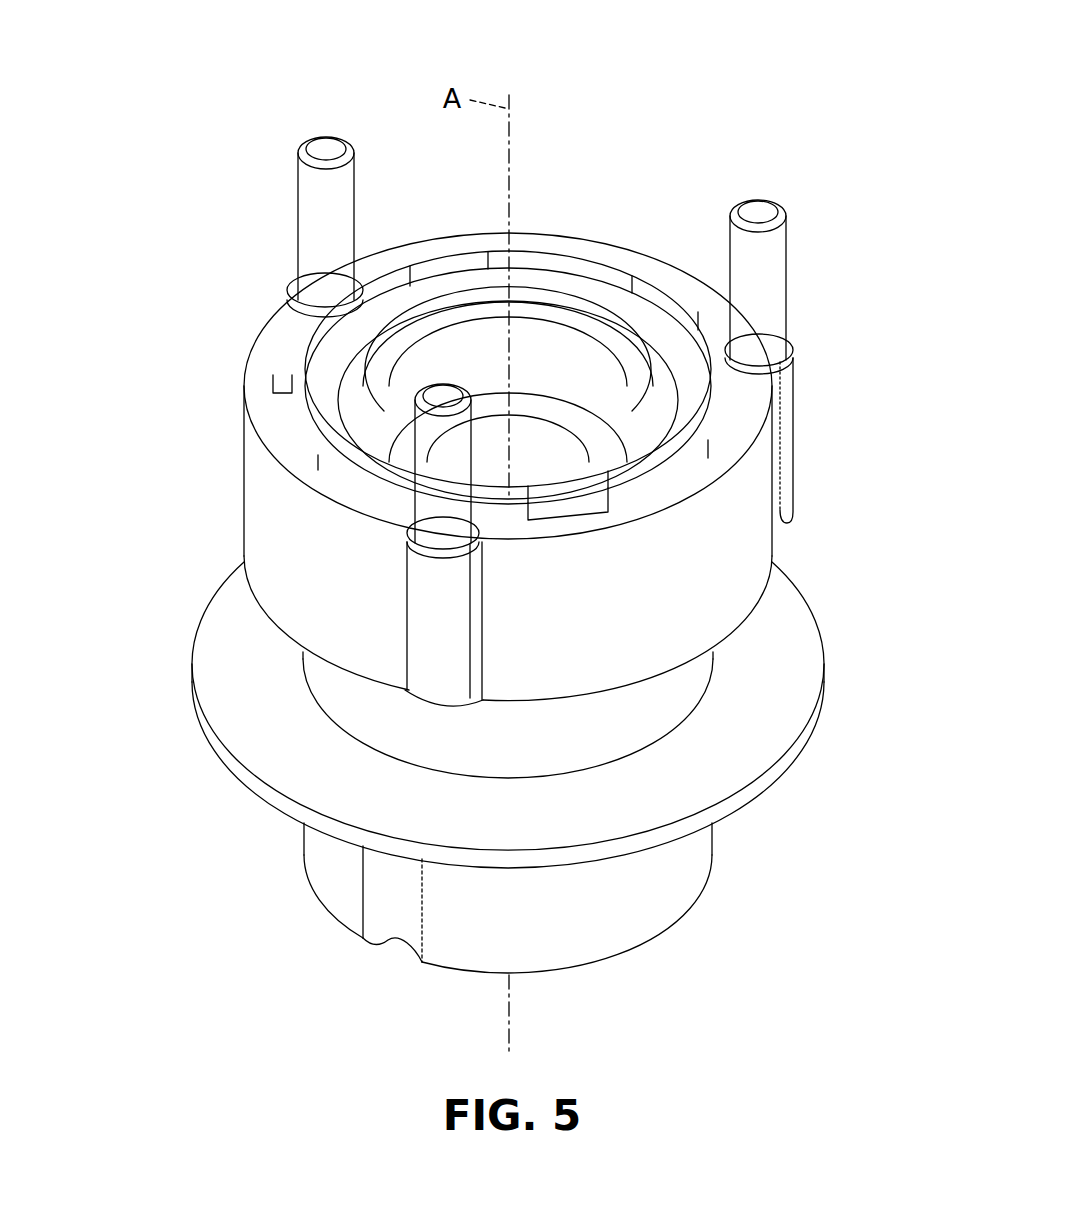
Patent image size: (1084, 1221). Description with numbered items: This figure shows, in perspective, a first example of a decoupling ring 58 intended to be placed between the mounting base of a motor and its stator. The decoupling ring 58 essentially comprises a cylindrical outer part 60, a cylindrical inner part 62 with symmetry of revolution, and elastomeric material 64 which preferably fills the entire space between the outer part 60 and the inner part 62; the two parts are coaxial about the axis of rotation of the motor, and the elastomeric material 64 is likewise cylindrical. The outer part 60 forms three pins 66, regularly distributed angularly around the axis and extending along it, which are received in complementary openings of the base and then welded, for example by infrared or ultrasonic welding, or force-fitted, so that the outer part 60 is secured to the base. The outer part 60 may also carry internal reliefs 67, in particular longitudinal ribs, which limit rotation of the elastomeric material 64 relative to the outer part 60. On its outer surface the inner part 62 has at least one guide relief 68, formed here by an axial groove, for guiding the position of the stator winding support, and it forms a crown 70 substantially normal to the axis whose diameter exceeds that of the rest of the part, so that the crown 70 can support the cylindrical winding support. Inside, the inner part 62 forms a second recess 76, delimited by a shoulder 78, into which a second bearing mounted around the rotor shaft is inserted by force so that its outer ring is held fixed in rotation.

The decoupling ring 58 is at (334, 88).
The outer part 60 is at (298, 605).
The inner part 62 is at (617, 917).
The elastomeric material 64 is at (335, 318).
The pins 66 is at (318, 190).
The internal reliefs 67 is at (452, 250).
The guide relief 68 is at (390, 924).
The crown 70 is at (735, 805).
The second recess 76 is at (538, 335).
The shoulder 78 is at (560, 408).